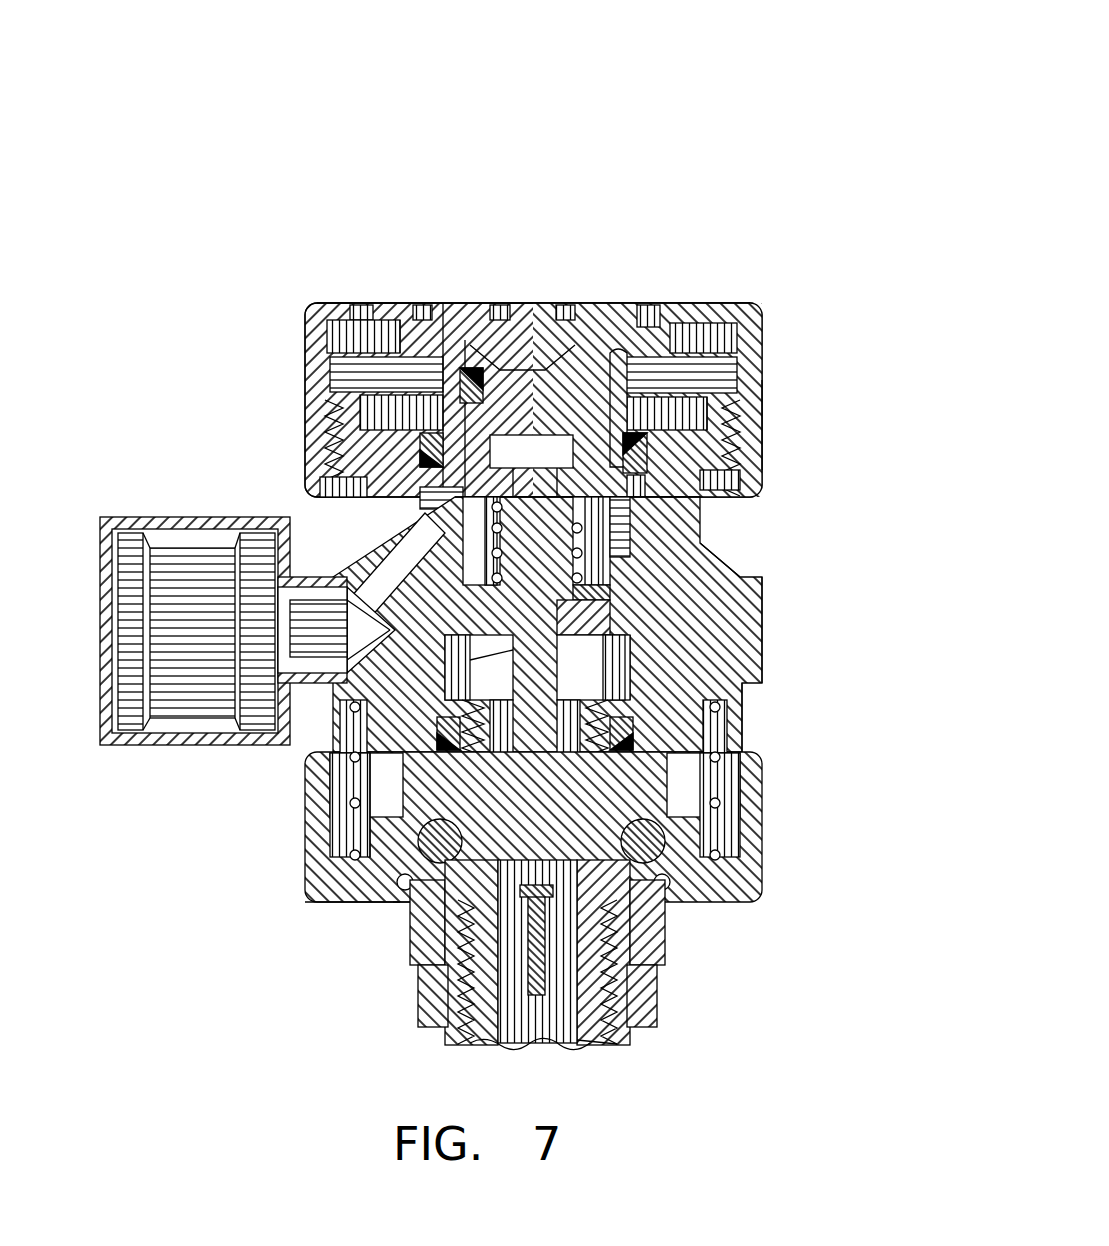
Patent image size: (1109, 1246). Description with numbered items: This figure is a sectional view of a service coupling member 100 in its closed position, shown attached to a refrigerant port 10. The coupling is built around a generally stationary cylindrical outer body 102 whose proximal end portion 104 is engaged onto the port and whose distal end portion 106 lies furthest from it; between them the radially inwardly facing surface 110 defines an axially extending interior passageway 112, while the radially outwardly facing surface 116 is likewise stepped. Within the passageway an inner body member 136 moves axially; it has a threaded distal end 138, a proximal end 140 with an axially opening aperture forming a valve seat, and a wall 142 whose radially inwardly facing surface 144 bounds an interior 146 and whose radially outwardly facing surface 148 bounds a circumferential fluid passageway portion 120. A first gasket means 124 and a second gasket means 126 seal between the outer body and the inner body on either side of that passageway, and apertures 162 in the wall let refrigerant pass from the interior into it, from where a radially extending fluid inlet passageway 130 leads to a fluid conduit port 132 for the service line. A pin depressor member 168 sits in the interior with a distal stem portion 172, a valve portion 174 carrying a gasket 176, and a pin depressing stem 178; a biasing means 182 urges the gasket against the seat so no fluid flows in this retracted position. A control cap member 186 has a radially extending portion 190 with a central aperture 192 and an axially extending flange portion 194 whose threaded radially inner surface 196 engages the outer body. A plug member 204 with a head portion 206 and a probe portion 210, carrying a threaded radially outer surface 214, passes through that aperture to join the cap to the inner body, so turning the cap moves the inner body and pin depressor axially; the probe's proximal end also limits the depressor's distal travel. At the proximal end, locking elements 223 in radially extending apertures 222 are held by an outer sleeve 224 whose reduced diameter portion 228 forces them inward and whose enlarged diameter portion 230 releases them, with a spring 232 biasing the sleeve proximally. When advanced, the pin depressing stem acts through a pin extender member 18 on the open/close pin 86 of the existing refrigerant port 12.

The service coupling member 100 is at (683, 125).
The distal end portion 106 is at (730, 235).
The proximal end portion 104 is at (757, 935).
The cylindrical outer body 102 is at (767, 656).
The plug member 204 is at (440, 300).
The central aperture 192 is at (445, 345).
The head portion 206 is at (505, 345).
The distal stem portion 172 is at (520, 378).
The probe portion 210 is at (625, 330).
The radially extending portion 190 is at (690, 303).
The control cap member 186 is at (735, 300).
The threaded radially outer surface 214 is at (440, 385).
The axially extending flange portion 194 is at (400, 360).
The threaded radially inner surface 196 is at (437, 420).
The threaded distal end 138 is at (740, 405).
The pin depressor member 168 is at (430, 450).
The first gasket means 124 is at (735, 440).
The apertures 162 is at (735, 458).
The radially inwardly facing surface 144 is at (645, 495).
The biasing means 182 is at (440, 485).
The circumferential fluid passageway portion 120 is at (645, 525).
The wall 142 is at (640, 565).
The valve portion 174 is at (425, 515).
The radially extending fluid inlet passageway 130 is at (397, 565).
The interior 146 is at (479, 541).
The fluid conduit port 132 is at (97, 582).
The radially outwardly facing surface 148 is at (732, 566).
The second gasket means 126 is at (652, 598).
The inner body member 136 is at (650, 628).
The proximal end 140 is at (625, 655).
The radially outwardly facing surface 116 is at (700, 688).
The radially inwardly facing surface 110 is at (745, 691).
The axially extending interior passageway 112 is at (613, 683).
The outer sleeve 224 is at (765, 773).
The locking elements 223 is at (718, 808).
The radially extending apertures 222 is at (720, 856).
The gasket 176 is at (445, 633).
The pin depressing stem 178 is at (353, 805).
The spring 232 is at (417, 858).
The enlarged diameter portion 230 is at (405, 890).
The pin extender member 18 is at (465, 928).
The reduced diameter portion 228 is at (410, 900).
The refrigerant port 10 is at (664, 1002).
The open/close pin 86 is at (538, 987).
The existing refrigerant port 12 is at (600, 1040).